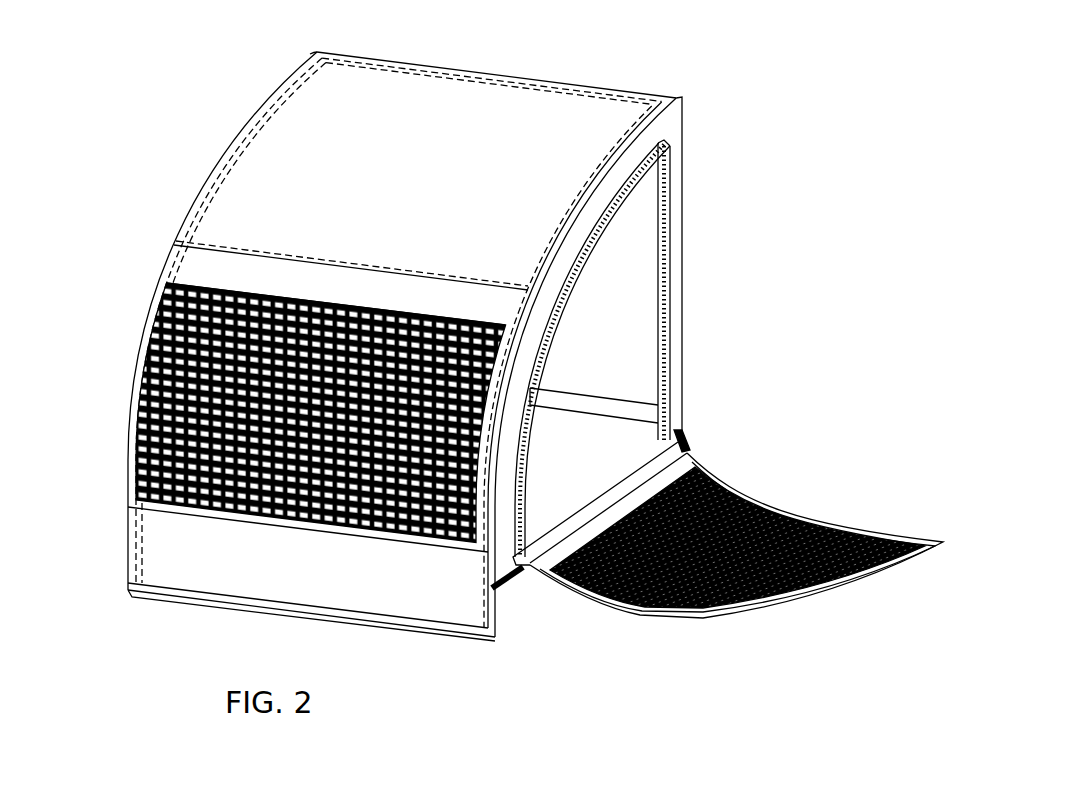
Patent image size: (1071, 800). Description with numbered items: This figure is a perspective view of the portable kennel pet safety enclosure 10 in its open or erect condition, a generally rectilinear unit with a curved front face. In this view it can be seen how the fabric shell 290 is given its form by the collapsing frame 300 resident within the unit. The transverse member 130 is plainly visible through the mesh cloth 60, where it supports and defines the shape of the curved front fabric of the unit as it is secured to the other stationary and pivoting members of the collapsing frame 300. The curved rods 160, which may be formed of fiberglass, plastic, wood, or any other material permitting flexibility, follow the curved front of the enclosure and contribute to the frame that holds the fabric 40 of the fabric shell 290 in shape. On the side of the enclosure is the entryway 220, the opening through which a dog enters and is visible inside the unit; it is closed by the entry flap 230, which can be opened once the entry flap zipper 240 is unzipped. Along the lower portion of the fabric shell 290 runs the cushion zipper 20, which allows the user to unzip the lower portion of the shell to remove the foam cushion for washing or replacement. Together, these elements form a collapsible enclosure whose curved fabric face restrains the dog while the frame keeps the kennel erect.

The portable kennel pet safety enclosure 10 is at (677, 200).
The cushion zipper 20 is at (507, 587).
The fabric 40 is at (652, 130).
The mesh cloth 60 is at (168, 367).
The transverse member 130 is at (247, 248).
The curved rods 160 is at (237, 140).
The entryway 220 is at (567, 468).
The entry flap 230 is at (865, 527).
The entry flap zipper 240 is at (667, 252).
The fabric shell 290 is at (263, 93).
The collapsing frame 300 is at (620, 398).